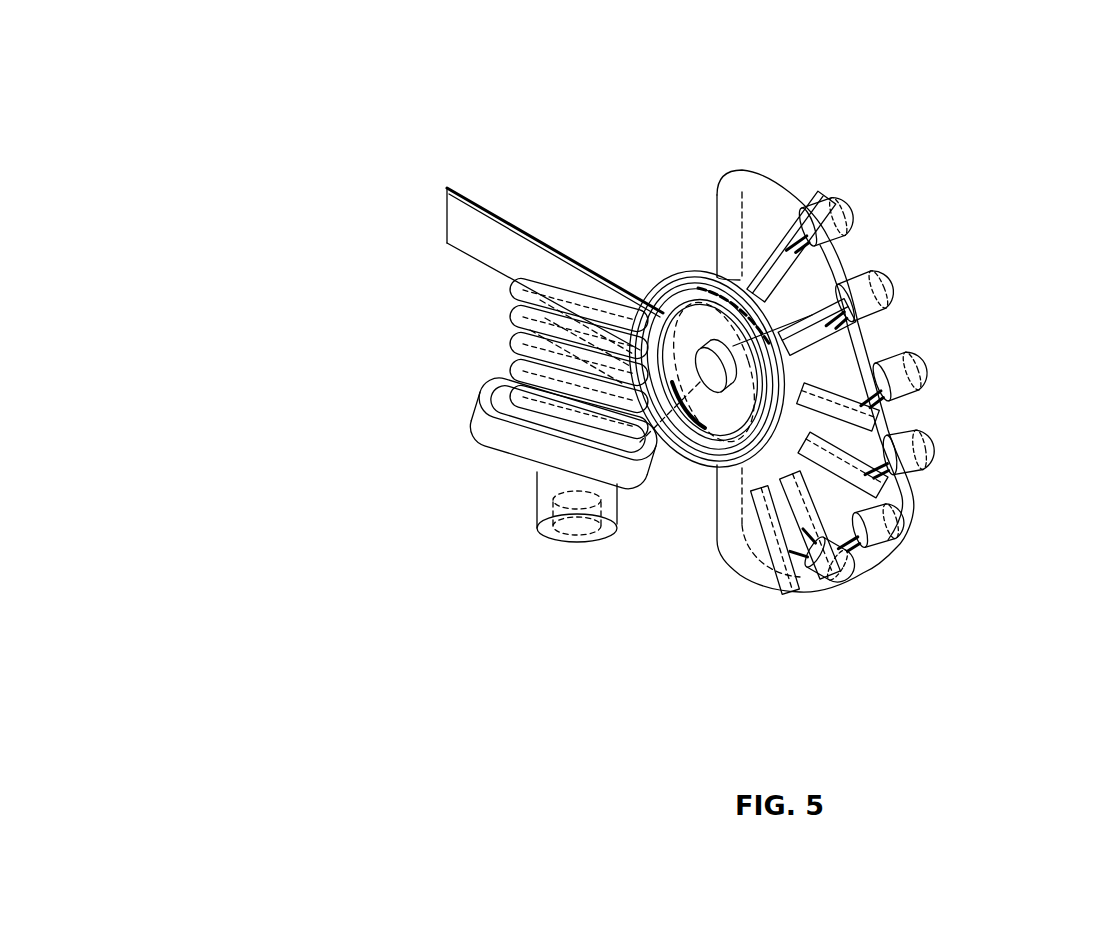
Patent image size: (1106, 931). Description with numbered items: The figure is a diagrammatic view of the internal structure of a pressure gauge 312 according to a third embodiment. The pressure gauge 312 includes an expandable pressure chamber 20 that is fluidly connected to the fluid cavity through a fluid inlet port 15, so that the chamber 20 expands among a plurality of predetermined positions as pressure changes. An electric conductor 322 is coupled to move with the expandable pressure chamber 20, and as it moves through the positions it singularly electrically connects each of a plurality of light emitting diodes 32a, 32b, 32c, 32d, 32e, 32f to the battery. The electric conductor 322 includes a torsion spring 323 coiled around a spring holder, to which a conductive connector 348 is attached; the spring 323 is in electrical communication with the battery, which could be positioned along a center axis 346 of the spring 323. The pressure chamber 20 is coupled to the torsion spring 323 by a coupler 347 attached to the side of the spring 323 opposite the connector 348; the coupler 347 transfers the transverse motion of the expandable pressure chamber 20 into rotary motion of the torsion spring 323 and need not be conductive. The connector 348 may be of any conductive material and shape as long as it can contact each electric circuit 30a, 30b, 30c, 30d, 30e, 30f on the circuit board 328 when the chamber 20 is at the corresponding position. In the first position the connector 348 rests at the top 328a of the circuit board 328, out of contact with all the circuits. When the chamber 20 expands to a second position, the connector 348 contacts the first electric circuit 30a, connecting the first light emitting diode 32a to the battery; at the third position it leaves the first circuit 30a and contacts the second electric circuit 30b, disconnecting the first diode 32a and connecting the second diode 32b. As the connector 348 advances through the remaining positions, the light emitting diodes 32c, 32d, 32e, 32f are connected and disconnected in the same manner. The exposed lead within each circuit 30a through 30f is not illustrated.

The pressure gauge 312 is at (398, 193).
The coupler 347 is at (482, 207).
The expandable pressure chamber 20 is at (520, 368).
The center axis 346 is at (673, 423).
The fluid inlet port 15 is at (537, 522).
The electric conductor 322 is at (797, 437).
The torsion spring 323 is at (722, 440).
The circuit board 328 is at (833, 594).
The top of the circuit board 328a is at (738, 183).
The conductive connector 348 is at (858, 432).
The first electric circuit 30a is at (750, 280).
The second electric circuit 30b is at (780, 327).
The third electric circuit 30c is at (803, 395).
The fourth electric circuit 30d is at (858, 444).
The fifth electric circuit 30e is at (850, 528).
The sixth electric circuit 30f is at (787, 577).
The first light emitting diode 32a is at (847, 207).
The second light emitting diode 32b is at (897, 272).
The third light emitting diode 32c is at (928, 372).
The fourth light emitting diode 32d is at (933, 438).
The fifth light emitting diode 32e is at (903, 503).
The sixth light emitting diode 32f is at (848, 578).